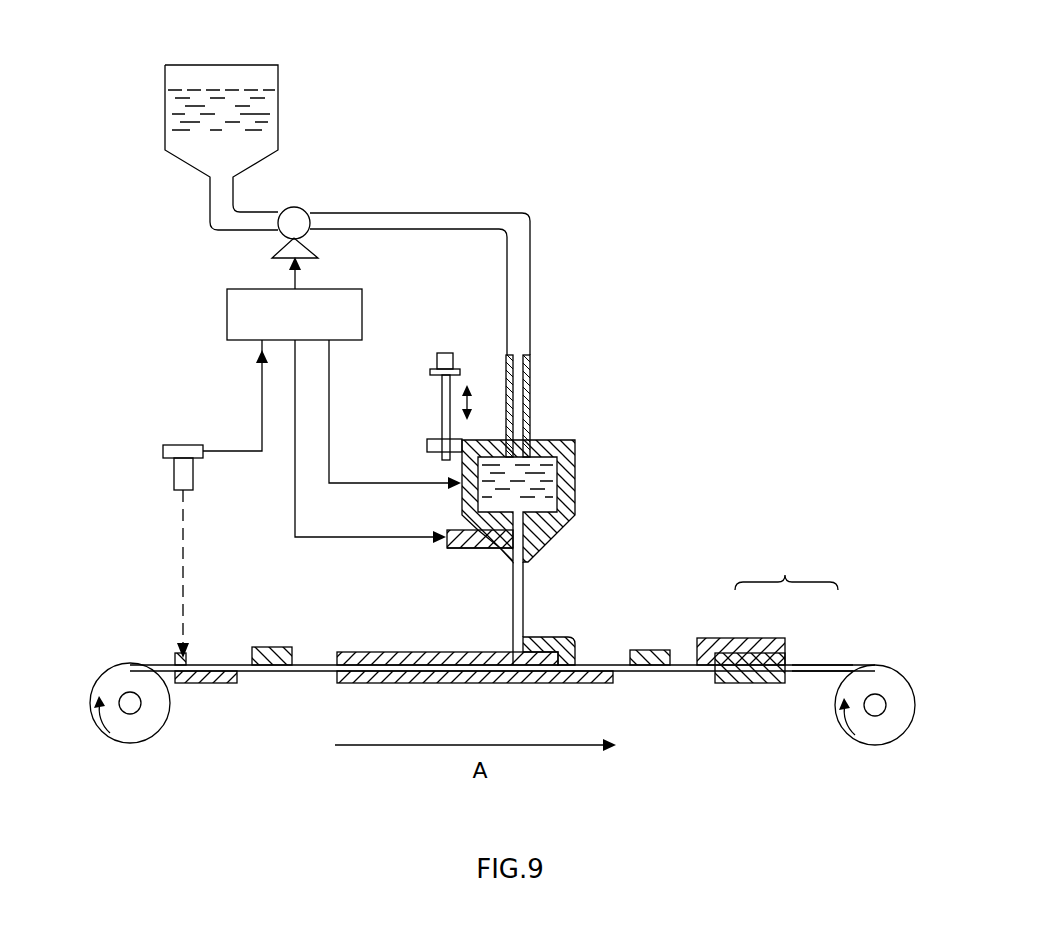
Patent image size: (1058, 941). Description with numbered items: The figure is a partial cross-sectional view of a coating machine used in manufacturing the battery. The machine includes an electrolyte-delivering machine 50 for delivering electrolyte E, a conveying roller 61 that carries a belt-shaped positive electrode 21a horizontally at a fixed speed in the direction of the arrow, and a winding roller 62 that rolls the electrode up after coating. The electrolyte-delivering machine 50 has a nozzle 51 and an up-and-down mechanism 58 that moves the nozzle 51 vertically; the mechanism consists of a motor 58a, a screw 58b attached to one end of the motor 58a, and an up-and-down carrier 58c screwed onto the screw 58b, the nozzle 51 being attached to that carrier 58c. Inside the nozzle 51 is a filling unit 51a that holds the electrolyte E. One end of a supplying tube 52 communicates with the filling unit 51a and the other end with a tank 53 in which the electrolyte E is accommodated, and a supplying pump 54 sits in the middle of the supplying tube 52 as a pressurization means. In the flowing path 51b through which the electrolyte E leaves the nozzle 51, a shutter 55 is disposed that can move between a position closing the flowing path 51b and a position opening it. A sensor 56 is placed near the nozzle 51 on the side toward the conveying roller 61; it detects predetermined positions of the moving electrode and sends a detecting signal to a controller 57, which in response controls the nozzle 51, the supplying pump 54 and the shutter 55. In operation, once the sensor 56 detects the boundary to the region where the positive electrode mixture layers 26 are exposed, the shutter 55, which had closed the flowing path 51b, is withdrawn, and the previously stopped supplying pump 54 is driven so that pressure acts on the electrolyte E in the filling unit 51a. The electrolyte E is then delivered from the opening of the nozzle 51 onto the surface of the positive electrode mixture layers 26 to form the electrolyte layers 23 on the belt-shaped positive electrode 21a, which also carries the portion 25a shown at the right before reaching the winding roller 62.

The electrolyte-delivering machine 50 is at (388, 140).
The tank 53 is at (185, 65).
The electrolyte E is at (238, 103).
The supplying pump 54 is at (298, 207).
The supplying tube 52 is at (483, 212).
The controller 57 is at (345, 289).
The sensor 56 is at (174, 445).
The up-and-down mechanism 58 is at (426, 378).
The motor 58a is at (437, 360).
The screw 58b is at (442, 405).
The up-and-down carrier 58c is at (427, 446).
The nozzle 51 is at (541, 510).
The filling unit 51a is at (557, 502).
The flowing path 51b is at (525, 535).
The shutter 55 is at (472, 550).
The conveying roller 61 is at (123, 662).
The winding roller 62 is at (890, 664).
The electrolyte layer 23 is at (698, 638).
The belt-shaped positive electrode 21a is at (784, 613).
The positive electrode mixture layer 26 is at (756, 670).
The belt portion 25a is at (827, 664).